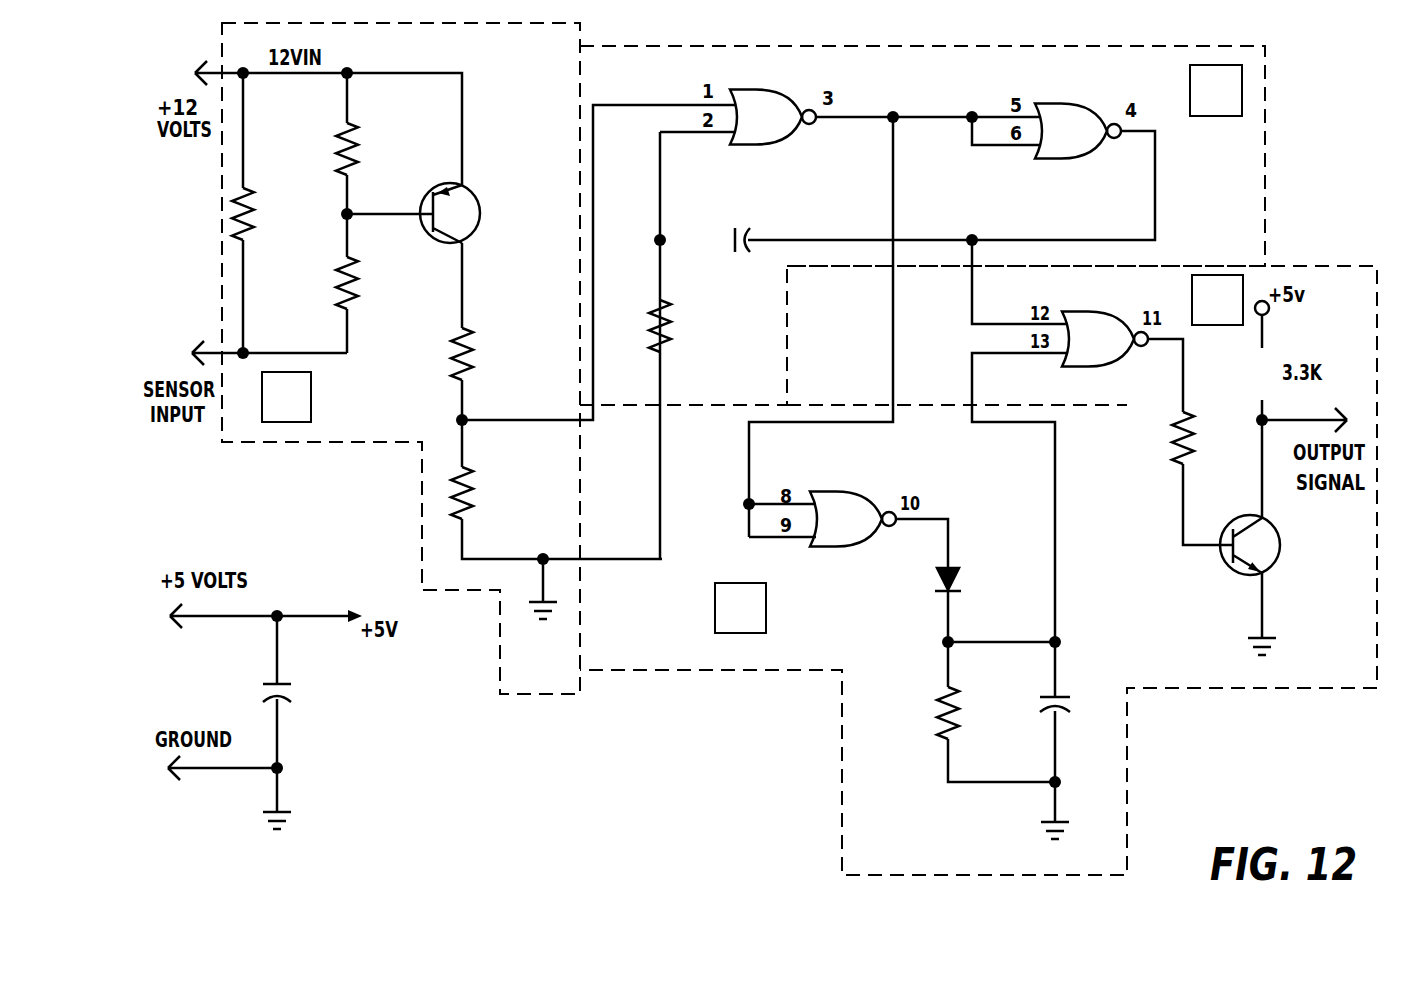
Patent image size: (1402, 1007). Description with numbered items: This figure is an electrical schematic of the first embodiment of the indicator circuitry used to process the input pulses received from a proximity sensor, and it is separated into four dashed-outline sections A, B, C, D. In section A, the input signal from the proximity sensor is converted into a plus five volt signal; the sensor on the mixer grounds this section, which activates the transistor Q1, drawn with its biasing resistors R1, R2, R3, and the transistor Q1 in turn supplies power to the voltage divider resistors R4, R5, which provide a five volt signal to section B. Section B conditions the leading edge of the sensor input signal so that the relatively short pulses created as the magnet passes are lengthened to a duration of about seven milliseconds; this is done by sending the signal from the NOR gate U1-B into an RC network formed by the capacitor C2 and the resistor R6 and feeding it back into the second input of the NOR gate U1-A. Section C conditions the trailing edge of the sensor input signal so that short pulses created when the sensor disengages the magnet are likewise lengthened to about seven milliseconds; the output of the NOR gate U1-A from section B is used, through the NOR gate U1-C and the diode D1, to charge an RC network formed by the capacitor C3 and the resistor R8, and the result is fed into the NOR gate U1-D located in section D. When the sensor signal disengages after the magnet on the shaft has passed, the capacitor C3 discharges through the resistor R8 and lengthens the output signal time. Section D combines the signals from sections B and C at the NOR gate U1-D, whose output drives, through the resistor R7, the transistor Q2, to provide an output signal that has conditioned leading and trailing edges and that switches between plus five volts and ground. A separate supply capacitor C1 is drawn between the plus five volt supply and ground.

The section A is at (286, 397).
The section B is at (1216, 90).
The section C is at (740, 608).
The section D is at (1217, 300).
The resistor 1.8K R1 is at (267, 213).
The resistor 3.9K R2 is at (372, 143).
The resistor 33K R3 is at (371, 283).
The voltage divider resistor R4 is at (491, 354).
The voltage divider resistor R5 is at (491, 493).
The resistor R6 is at (688, 327).
The resistor 10K R7 is at (1204, 436).
The resistor R8 is at (923, 713).
The capacitor 0.1 C1 is at (289, 696).
The capacitor C2 is at (736, 244).
The capacitor C3 is at (1065, 705).
The transistor Q1 is at (487, 200).
The transistor 2N3904 Q2 is at (1288, 545).
The diode 1N914B D1 is at (986, 585).
The NOR gate 4001B U1-A is at (773, 116).
The NOR gate 4001B U1-B is at (1078, 130).
The NOR gate 4001B U1-C is at (853, 521).
The NOR gate 4001B U1-D is at (1100, 337).